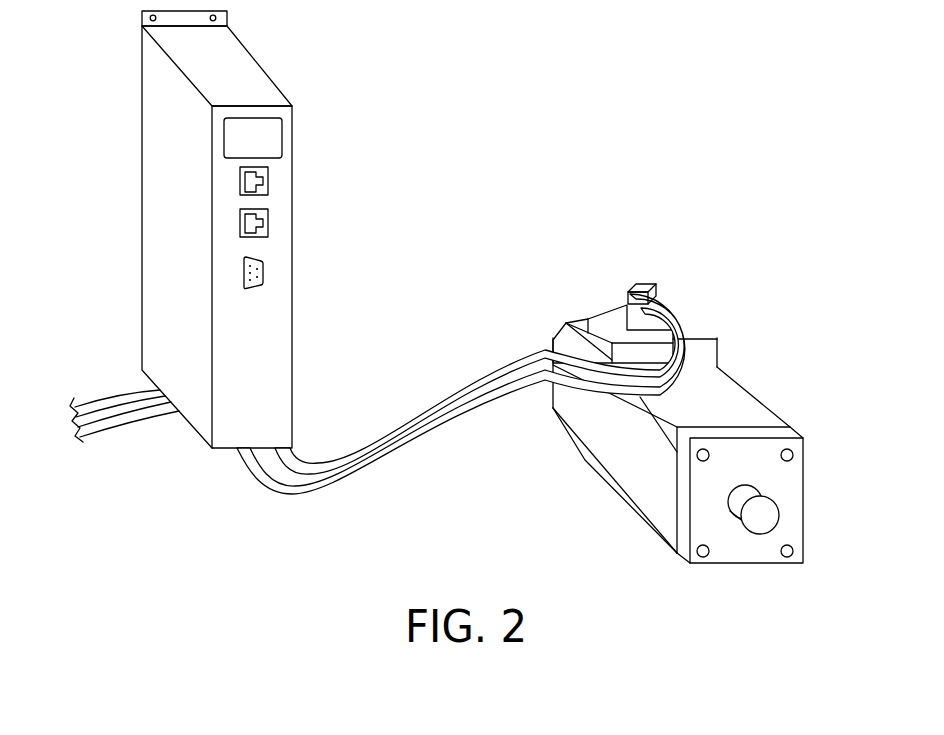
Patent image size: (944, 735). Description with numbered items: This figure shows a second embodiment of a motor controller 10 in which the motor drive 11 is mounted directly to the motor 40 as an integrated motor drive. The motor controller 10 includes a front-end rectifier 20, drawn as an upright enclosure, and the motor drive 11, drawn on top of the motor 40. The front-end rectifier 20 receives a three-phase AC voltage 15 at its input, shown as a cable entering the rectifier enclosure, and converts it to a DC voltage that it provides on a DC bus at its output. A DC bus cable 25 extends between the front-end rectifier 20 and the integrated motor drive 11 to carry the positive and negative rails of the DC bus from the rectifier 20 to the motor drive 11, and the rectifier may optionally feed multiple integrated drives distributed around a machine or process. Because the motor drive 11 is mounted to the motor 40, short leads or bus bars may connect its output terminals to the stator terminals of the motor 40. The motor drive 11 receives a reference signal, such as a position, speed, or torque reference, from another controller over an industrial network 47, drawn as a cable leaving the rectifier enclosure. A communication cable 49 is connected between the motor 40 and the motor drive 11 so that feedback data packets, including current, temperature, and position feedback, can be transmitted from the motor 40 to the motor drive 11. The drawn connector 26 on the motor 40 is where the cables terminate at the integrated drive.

The motor controller 10 is at (442, 287).
The motor drive 11 is at (726, 318).
The three-phase AC voltage 15 is at (113, 408).
The front-end rectifier 20 is at (160, 245).
The DC bus cable 25 is at (357, 456).
The motor connector 26 is at (627, 298).
The motor 40 is at (748, 397).
The industrial network 47 is at (135, 427).
The communication cable 49 is at (273, 492).